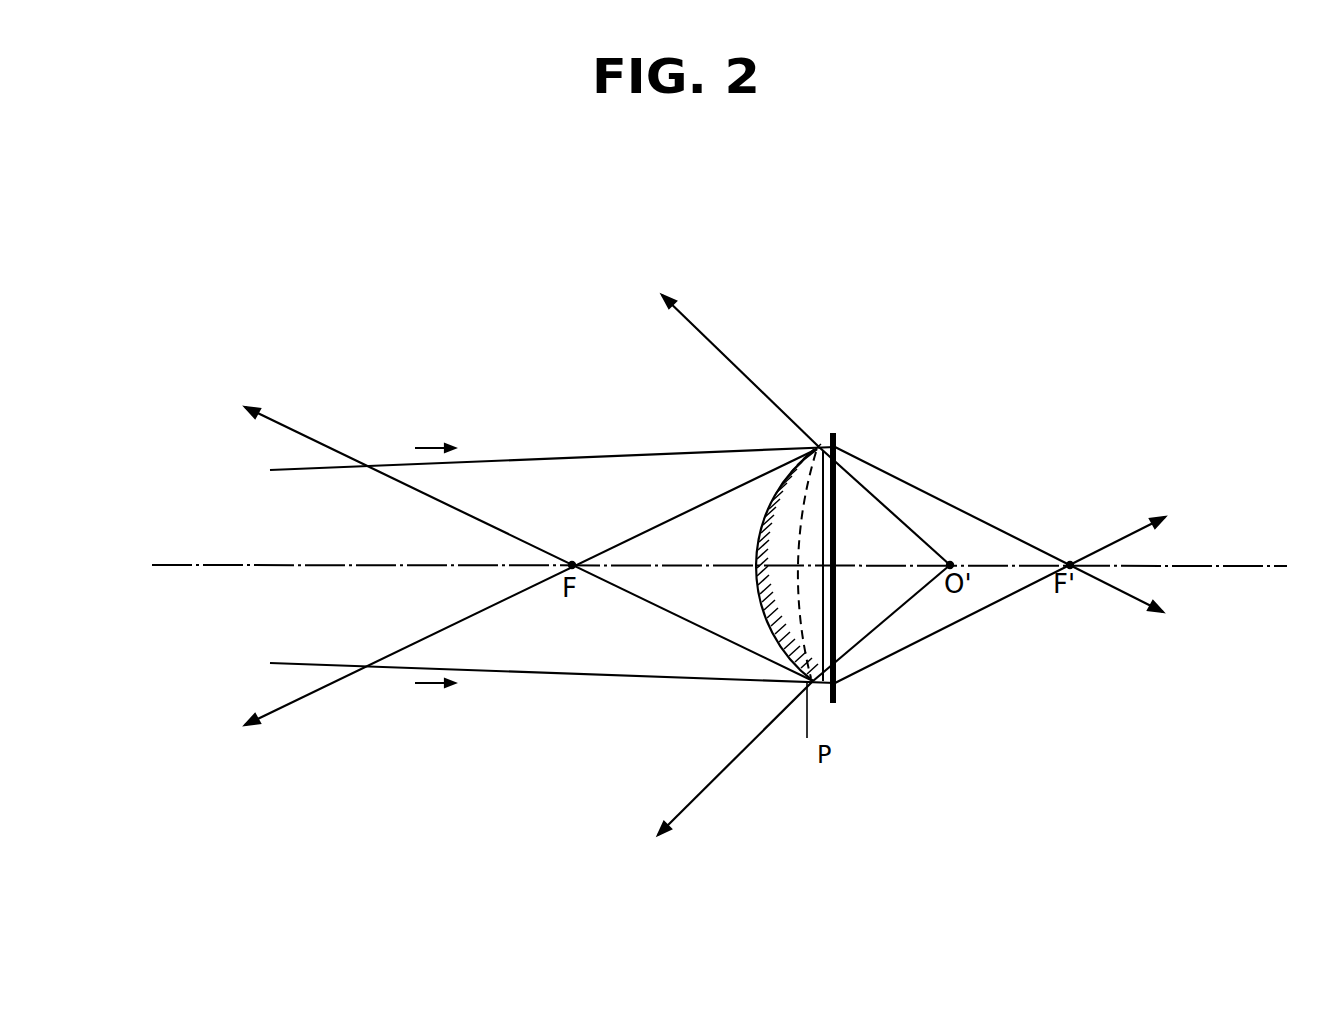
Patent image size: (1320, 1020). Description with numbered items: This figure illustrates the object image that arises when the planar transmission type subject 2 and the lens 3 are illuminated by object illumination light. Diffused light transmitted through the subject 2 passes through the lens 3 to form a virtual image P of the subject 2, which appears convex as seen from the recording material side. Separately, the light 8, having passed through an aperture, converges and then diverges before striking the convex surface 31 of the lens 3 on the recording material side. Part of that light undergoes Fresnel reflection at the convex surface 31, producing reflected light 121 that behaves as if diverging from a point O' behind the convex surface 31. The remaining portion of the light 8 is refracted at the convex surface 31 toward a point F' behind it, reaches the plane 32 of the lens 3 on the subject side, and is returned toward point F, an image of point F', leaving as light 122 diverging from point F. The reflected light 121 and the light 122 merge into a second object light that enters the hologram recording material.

The planar transmission type subject 2 is at (836, 442).
The lens 3 is at (700, 535).
The convex surface 31 is at (760, 505).
The plane 32 is at (812, 433).
The light 8 is at (393, 668).
The reflected light 121 is at (685, 308).
The reflected light 122 is at (282, 420).